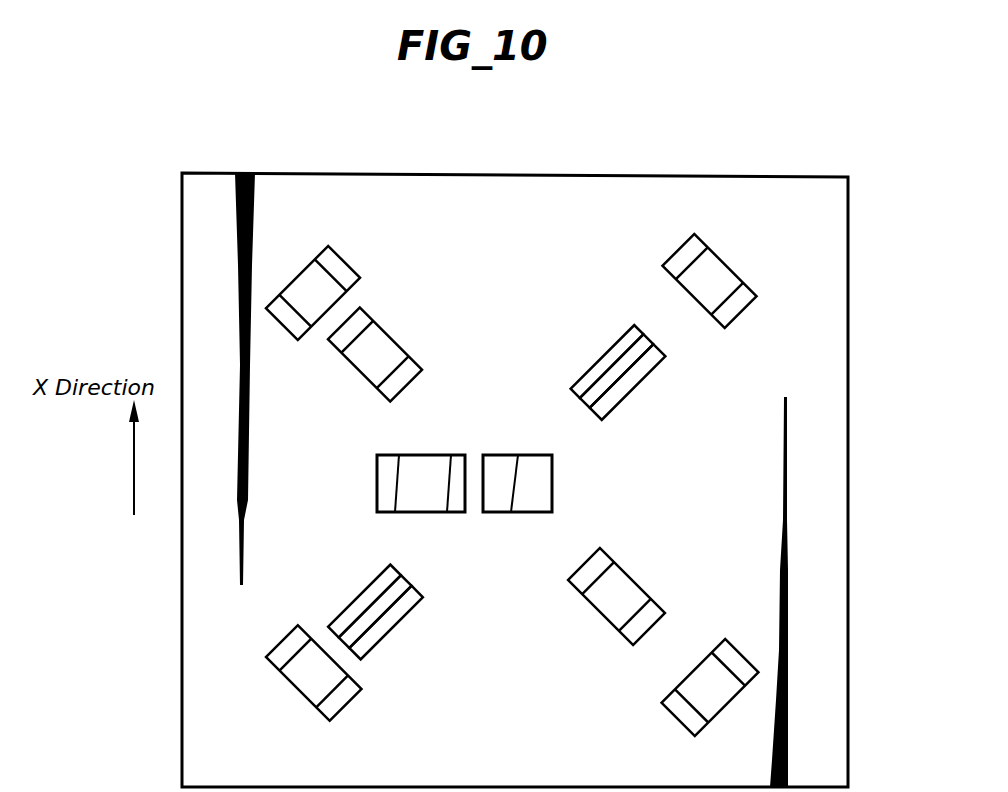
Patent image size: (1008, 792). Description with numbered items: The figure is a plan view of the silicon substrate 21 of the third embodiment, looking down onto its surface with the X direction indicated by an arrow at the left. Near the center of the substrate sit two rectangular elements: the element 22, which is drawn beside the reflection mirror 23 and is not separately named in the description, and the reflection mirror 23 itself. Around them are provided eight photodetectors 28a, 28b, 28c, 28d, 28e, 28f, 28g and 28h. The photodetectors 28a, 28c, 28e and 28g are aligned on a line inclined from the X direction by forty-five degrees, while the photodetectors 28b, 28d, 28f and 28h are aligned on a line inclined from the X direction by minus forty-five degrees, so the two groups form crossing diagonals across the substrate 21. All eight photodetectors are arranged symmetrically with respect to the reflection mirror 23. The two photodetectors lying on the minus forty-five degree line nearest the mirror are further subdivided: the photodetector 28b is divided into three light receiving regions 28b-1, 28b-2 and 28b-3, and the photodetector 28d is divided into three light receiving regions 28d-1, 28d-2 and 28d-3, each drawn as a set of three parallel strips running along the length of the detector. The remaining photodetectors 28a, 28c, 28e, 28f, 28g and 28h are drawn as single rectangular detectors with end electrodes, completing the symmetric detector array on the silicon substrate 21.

The silicon substrate 21 is at (849, 422).
The first reference chip 22 is at (376, 488).
The reflection mirror 23 is at (552, 487).
The photodetector 28a is at (397, 336).
The photodetector 28b is at (418, 606).
The light receiving region 28b-1 is at (396, 571).
The light receiving region 28b-2 is at (406, 580).
The light receiving region 28b-3 is at (418, 591).
The photodetector 28c is at (642, 589).
The photodetector 28d is at (640, 347).
The light receiving region 28d-1 is at (645, 326).
The light receiving region 28d-2 is at (657, 338).
The light receiving region 28d-3 is at (665, 352).
The photodetector 28e is at (344, 260).
The photodetector 28f is at (350, 702).
The photodetector 28g is at (736, 648).
The photodetector 28h is at (726, 264).